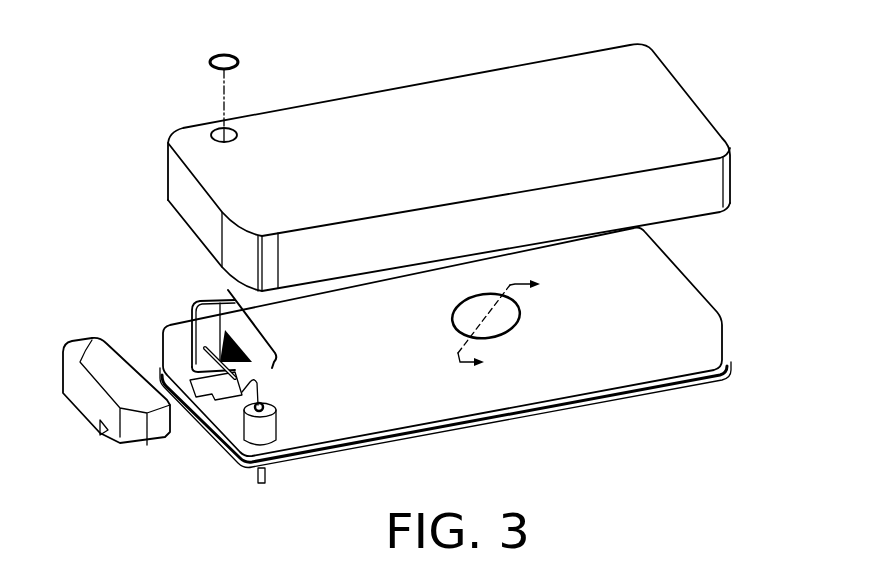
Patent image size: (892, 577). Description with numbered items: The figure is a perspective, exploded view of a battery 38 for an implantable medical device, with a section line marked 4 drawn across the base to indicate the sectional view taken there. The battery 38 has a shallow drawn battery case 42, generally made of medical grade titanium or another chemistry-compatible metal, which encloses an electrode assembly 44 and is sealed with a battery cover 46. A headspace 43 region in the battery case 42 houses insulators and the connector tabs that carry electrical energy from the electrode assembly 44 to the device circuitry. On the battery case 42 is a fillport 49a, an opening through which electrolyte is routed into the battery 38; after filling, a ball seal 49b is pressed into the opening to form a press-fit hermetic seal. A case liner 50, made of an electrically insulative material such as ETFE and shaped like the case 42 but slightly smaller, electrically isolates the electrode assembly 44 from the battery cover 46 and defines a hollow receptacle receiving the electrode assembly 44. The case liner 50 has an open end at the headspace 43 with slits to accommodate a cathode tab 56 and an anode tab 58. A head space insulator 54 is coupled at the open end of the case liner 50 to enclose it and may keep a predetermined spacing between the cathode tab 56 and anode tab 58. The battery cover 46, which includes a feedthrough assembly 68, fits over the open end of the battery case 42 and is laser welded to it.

The battery 38 is at (707, 447).
The battery case 42 is at (462, 72).
The headspace region 43 is at (262, 325).
The electrode assembly 44 is at (185, 332).
The battery cover 46 is at (298, 462).
The fillport 49a is at (222, 128).
The ball seal 49b is at (228, 55).
The case liner 50 is at (723, 337).
The head space insulator 54 is at (85, 395).
The cathode tab 56 is at (233, 300).
The anode tab 58 is at (213, 390).
The feedthrough assembly 68 is at (232, 439).
The section line 4- 4 is at (501, 328).